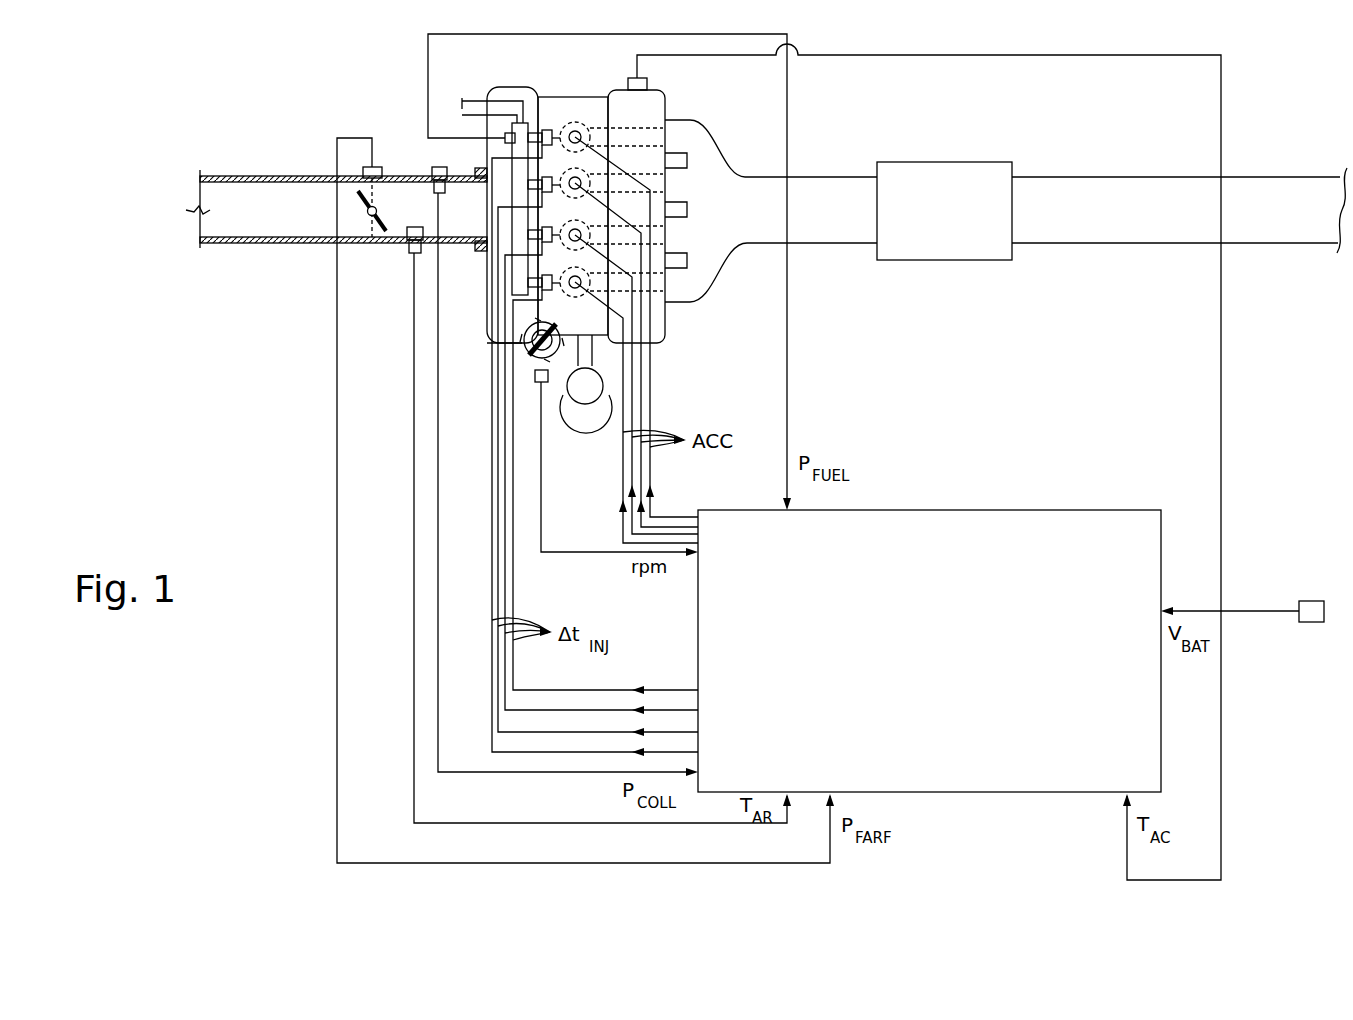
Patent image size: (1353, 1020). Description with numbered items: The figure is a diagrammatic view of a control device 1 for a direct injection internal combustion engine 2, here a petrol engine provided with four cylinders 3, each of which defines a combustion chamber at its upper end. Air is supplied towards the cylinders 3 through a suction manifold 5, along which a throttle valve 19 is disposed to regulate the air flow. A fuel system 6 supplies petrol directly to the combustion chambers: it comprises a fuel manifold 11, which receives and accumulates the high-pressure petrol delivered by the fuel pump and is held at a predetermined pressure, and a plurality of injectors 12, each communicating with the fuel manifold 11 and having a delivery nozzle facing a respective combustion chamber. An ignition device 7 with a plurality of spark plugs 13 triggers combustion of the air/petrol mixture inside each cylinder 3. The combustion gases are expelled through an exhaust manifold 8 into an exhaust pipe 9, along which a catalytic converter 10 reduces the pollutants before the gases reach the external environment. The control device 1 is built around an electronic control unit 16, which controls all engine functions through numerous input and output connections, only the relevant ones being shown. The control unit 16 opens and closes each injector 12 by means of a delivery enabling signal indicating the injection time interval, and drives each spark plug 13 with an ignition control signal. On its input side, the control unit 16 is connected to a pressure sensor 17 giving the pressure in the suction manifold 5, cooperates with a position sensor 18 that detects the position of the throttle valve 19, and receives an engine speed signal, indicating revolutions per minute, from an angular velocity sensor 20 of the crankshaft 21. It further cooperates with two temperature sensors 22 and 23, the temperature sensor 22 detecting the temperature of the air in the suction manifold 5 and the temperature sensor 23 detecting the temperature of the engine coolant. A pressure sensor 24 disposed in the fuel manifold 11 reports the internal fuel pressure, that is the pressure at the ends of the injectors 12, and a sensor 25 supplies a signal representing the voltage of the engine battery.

The control device 1 is at (970, 841).
The direct injection internal combustion engine 2 is at (577, 84).
The cylinders 3 is at (564, 170).
The suction manifold 5 is at (265, 196).
The fuel system 6 is at (468, 90).
The ignition device 7 is at (592, 108).
The exhaust manifold 8 is at (738, 192).
The exhaust pipe 9 is at (826, 192).
The catalytic converter 10 is at (949, 176).
The fuel manifold 11 is at (520, 123).
The injectors 12 is at (531, 237).
The spark plugs 13 is at (583, 237).
The electronic control unit 16 is at (1063, 498).
The pressure sensor 17 is at (437, 167).
The position sensor 18 is at (365, 167).
The throttle valve 19 is at (370, 219).
The angular velocity sensor 20 is at (535, 376).
The crankshaft 21 is at (585, 411).
The temperature sensor 22 is at (410, 240).
The temperature sensor 23 is at (647, 84).
The pressure sensor 24 is at (505, 136).
The sensor 25 is at (1310, 600).